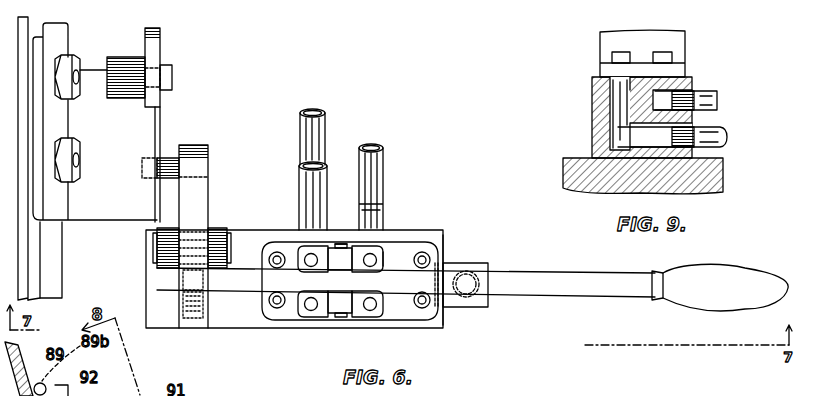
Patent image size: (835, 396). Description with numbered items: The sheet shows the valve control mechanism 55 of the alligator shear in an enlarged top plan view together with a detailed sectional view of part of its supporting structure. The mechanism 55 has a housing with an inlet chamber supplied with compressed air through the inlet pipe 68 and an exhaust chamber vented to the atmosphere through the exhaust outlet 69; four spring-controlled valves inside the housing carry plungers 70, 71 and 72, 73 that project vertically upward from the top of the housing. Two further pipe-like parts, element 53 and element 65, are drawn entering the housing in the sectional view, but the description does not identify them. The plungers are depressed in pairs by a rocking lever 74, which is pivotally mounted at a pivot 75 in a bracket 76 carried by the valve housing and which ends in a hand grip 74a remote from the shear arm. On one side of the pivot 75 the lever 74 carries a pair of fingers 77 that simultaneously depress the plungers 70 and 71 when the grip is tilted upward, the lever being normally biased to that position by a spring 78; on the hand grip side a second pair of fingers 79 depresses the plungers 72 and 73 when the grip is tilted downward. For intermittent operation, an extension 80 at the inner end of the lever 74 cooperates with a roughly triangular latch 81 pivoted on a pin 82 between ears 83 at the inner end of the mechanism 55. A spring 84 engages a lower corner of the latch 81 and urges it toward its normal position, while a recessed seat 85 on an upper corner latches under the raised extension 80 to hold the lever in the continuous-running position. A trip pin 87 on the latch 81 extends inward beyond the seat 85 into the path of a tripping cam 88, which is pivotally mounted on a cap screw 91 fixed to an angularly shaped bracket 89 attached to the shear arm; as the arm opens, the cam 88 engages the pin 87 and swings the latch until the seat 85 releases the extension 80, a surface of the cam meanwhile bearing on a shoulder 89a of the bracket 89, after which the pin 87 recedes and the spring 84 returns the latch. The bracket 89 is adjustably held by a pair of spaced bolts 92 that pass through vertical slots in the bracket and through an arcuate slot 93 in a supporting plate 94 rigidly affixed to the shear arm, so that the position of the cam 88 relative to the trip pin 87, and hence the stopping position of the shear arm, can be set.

In FIG. 6, the tube 53 is at (372, 147).
In FIG. 9, the tube 53 is at (727, 135).
In FIG. 6, the valve control mechanism 55 is at (442, 230).
In FIG. 9, the valve control mechanism 55 is at (592, 63).
In FIG. 6, the inner tube 65 is at (310, 185).
In FIG. 6, the inlet pipe 68 is at (305, 125).
In FIG. 6, the exhaust outlet 69 is at (378, 212).
In FIG. 9, the exhaust outlet 69 is at (710, 97).
In FIG. 6, the plunger 70 is at (293, 250).
In FIG. 6, the plunger 71 is at (283, 316).
In FIG. 6, the plunger 72 is at (392, 304).
In FIG. 6, the plunger 73 is at (380, 255).
In FIG. 6, the rocking lever 74 is at (577, 291).
In FIG. 6, the hand grip 74a is at (742, 281).
In FIG. 6, the pivot 75 is at (342, 242).
In FIG. 6, the bracket 76 is at (345, 314).
In FIG. 6, the fingers 77 is at (305, 241).
In FIG. 6, the spring 78 is at (470, 273).
In FIG. 6, the second pair of fingers 79 is at (375, 243).
In FIG. 6, the extension 80 is at (229, 300).
In FIG. 6, the latch 81 is at (205, 145).
In FIG. 6, the pin 82 is at (157, 241).
In FIG. 6, the ears 83 is at (157, 260).
In FIG. 6, the spring 84 is at (191, 318).
In FIG. 6, the seat 85 is at (183, 272).
In FIG. 6, the trip pin 87 is at (167, 158).
In FIG. 6, the tripping cam 88 is at (155, 42).
In FIG. 6, the bracket 89 is at (95, 121).
In FIG. 6, the shoulder 89a is at (160, 107).
In FIG. 6, the cap screw 91 is at (172, 72).
In FIG. 6, the bolts 92 is at (50, 63).
In FIG. 6, the arcuate slot 93 is at (42, 268).
In FIG. 6, the supporting plate 94 is at (57, 238).